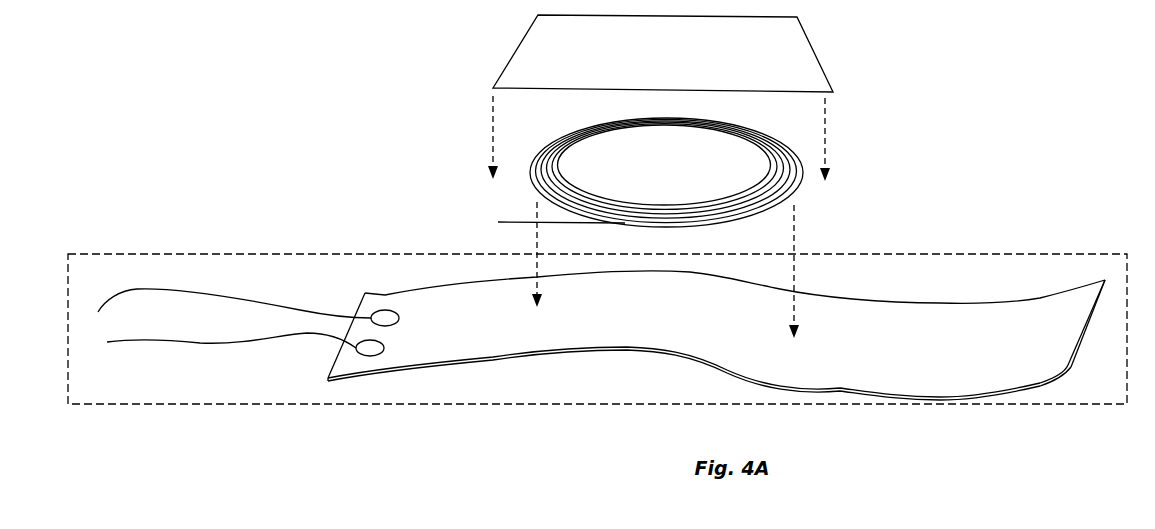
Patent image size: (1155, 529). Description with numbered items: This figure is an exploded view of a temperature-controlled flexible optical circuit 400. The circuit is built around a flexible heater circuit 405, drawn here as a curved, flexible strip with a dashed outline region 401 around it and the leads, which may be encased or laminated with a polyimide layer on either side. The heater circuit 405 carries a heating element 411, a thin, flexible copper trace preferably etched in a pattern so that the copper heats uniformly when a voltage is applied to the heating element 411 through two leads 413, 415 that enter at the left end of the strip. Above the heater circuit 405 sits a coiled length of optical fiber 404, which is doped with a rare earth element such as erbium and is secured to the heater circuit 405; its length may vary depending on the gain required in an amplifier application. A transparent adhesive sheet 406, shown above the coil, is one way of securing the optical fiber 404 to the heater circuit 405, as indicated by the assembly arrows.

The temperature-controlled flexible optical circuit 400 is at (266, 133).
The substrate 401 is at (716, 365).
The optical fiber 404 is at (808, 198).
The flexible heater circuit 405 is at (295, 253).
The adhesive sheet 406 is at (785, 69).
The heating element 411 is at (817, 348).
The lead 413 is at (210, 298).
The lead 415 is at (207, 345).